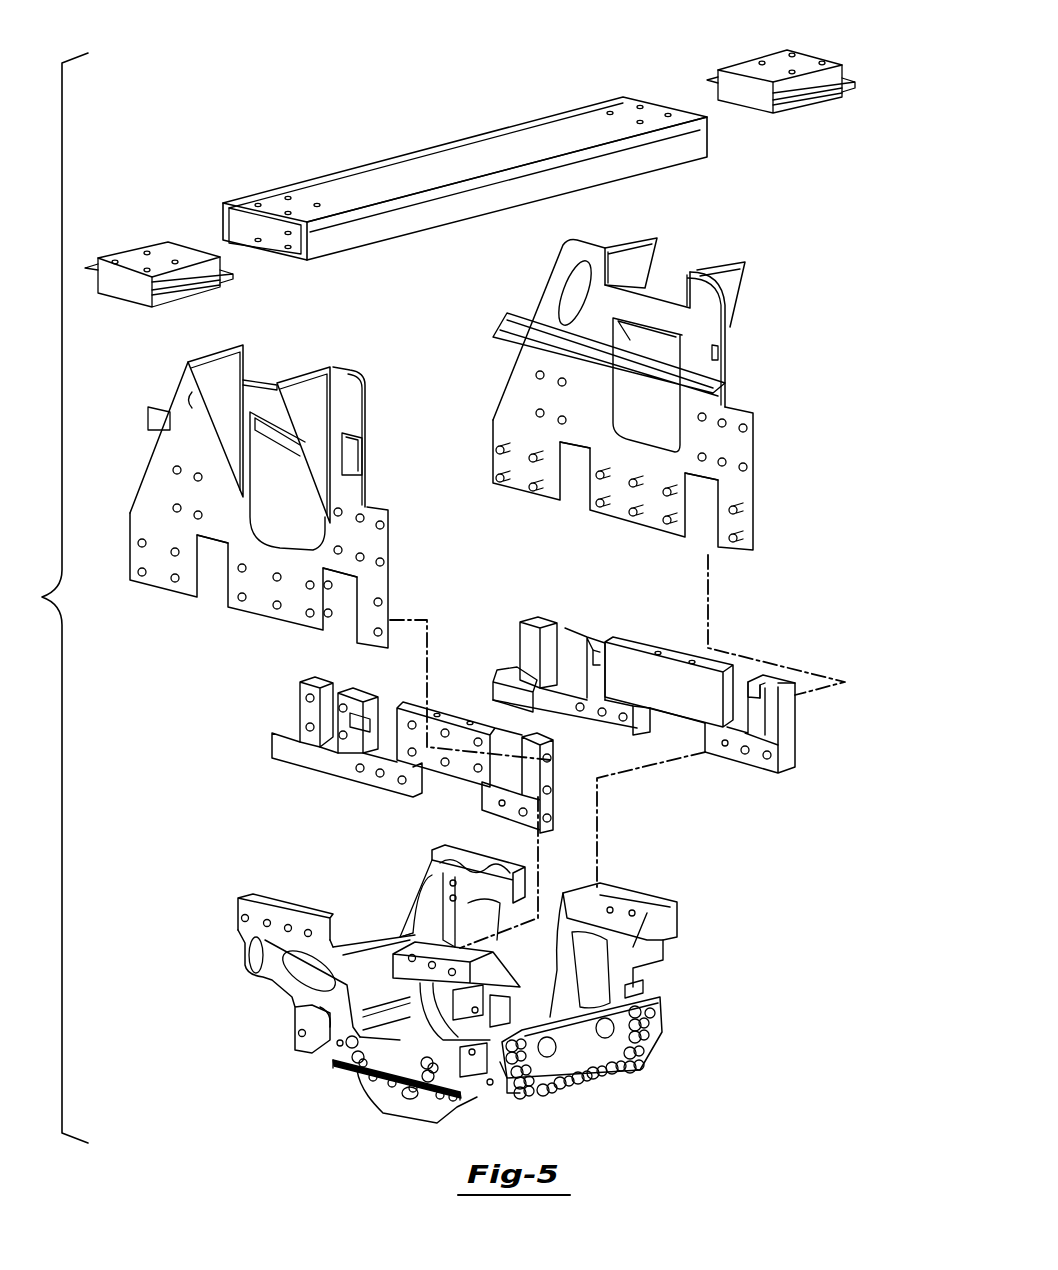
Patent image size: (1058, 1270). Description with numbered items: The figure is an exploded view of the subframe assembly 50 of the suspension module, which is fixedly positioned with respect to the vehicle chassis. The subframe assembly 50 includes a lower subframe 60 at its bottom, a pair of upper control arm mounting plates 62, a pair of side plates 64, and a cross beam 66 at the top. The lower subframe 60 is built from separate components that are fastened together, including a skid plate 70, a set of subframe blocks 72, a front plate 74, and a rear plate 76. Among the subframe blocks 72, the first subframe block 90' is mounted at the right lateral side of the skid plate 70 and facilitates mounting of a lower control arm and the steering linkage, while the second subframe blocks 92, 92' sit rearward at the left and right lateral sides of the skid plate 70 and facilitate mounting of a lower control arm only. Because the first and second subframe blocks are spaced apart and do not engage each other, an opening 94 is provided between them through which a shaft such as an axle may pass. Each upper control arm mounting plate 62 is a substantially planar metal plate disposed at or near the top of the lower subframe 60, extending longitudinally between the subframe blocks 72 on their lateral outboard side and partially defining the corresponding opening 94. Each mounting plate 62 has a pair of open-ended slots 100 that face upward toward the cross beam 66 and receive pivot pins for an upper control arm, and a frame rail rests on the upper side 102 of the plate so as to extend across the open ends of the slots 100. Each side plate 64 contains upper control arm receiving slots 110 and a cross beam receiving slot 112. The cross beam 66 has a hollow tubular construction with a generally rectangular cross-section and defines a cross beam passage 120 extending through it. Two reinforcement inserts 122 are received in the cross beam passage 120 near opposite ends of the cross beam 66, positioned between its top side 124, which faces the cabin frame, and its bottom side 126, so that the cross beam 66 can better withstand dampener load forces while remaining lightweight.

The subframe assembly 50 is at (55, 598).
The lower subframe 60 is at (464, 1003).
The upper control arm mounting plate 62 is at (532, 751).
The side plate 64 is at (461, 431).
The cross beam 66 is at (465, 192).
The skid plate 70 is at (447, 1123).
The subframe blocks 72 is at (424, 847).
The front plate 74 is at (592, 1062).
The rear plate 76 is at (377, 940).
The first subframe block 90' is at (622, 1012).
The second subframe block 92 is at (297, 978).
The second subframe block 92' is at (502, 889).
The opening 94 is at (550, 906).
The slots 100 is at (596, 644).
The upper side 102 is at (452, 717).
The upper control arm receiving slot 110 is at (338, 629).
The cross beam receiving slot 112 is at (245, 349).
The cross beam passage 120 is at (277, 238).
The reinforcement insert 122 is at (138, 248).
The top side 124 is at (458, 150).
The bottom side 126 is at (391, 240).